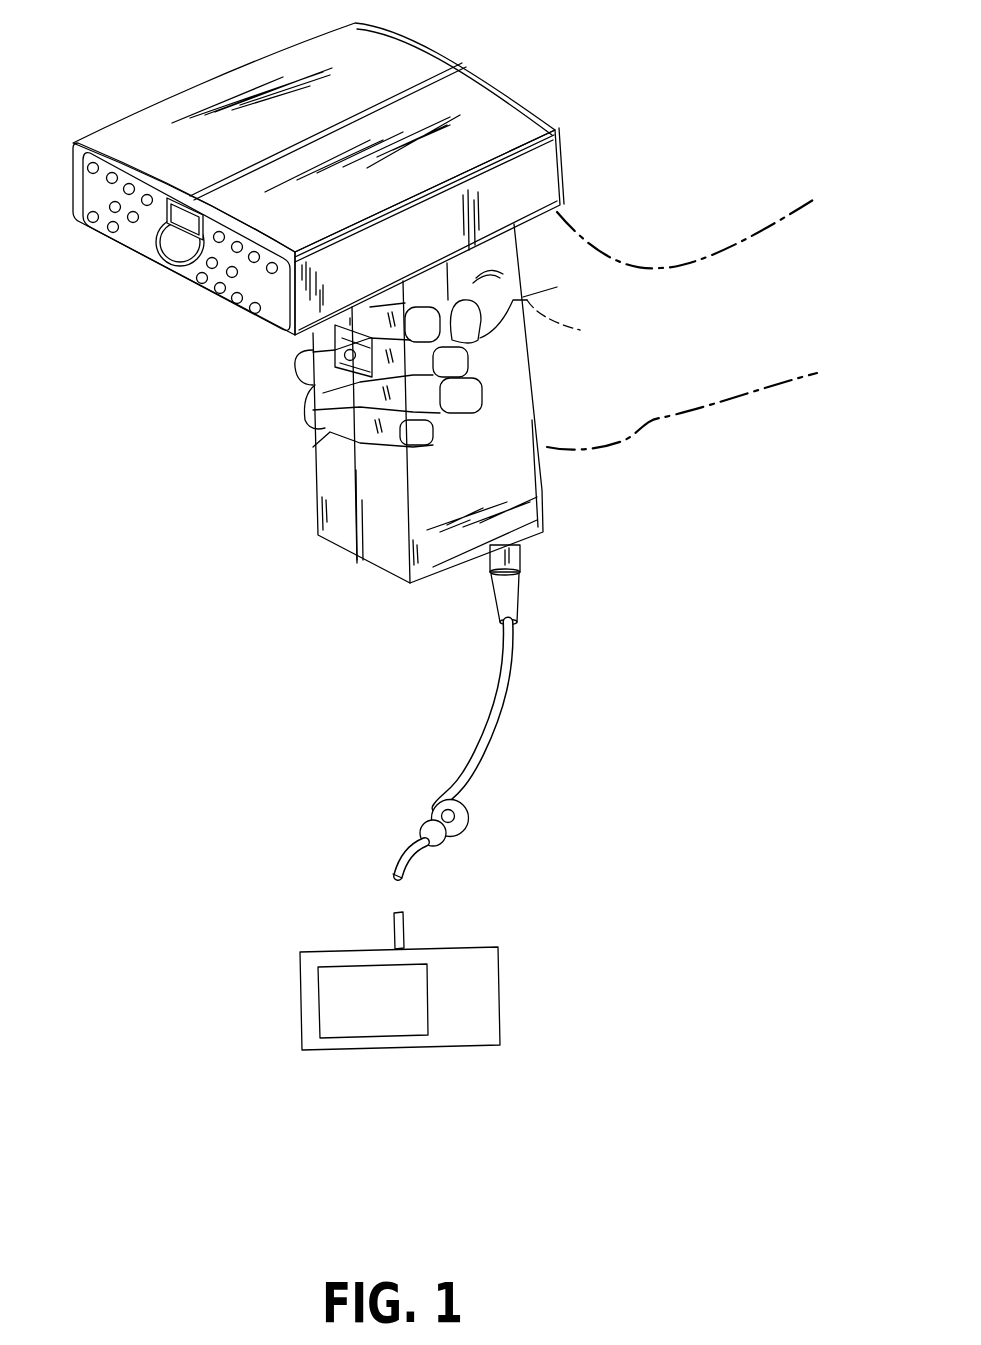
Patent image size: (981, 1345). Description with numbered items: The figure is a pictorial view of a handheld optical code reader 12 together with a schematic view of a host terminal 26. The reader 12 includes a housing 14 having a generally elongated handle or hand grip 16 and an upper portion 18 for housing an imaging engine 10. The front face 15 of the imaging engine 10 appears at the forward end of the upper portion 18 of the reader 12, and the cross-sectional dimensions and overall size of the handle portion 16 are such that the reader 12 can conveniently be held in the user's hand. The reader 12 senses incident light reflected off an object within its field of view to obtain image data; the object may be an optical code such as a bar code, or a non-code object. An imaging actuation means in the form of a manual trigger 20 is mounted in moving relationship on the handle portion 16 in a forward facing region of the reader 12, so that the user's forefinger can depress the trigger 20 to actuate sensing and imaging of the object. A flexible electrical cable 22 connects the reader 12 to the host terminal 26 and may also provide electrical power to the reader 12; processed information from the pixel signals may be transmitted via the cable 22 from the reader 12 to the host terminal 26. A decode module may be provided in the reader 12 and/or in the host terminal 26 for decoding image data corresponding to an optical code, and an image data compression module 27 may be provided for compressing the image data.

The imaging engine 10 is at (437, 291).
The handheld optical code reader 12 is at (473, 72).
The housing 14 is at (563, 173).
The front face 15 is at (132, 233).
The handle 16 is at (430, 403).
The upper portion 18 is at (270, 54).
The manual trigger 20 is at (297, 380).
The flexible electrical cable 22 is at (523, 603).
The host terminal 26 is at (425, 986).
The image data compression module 27 is at (357, 1018).